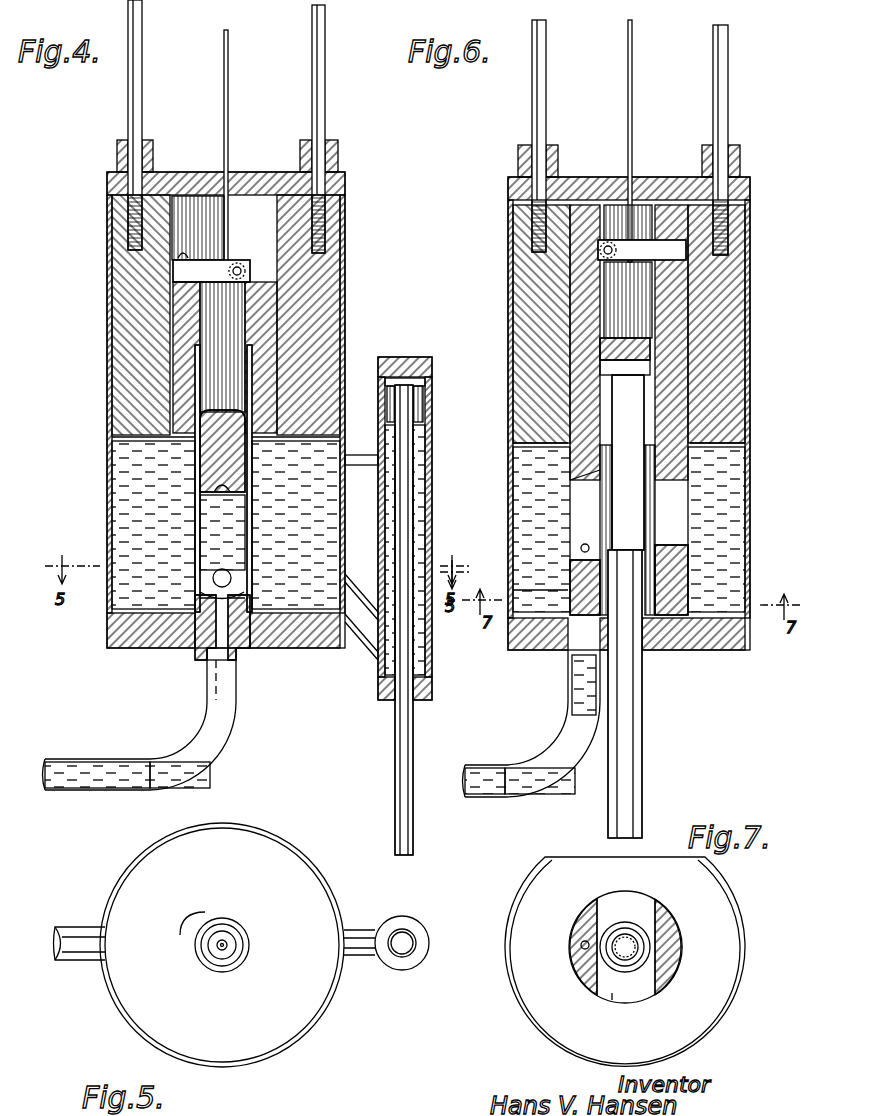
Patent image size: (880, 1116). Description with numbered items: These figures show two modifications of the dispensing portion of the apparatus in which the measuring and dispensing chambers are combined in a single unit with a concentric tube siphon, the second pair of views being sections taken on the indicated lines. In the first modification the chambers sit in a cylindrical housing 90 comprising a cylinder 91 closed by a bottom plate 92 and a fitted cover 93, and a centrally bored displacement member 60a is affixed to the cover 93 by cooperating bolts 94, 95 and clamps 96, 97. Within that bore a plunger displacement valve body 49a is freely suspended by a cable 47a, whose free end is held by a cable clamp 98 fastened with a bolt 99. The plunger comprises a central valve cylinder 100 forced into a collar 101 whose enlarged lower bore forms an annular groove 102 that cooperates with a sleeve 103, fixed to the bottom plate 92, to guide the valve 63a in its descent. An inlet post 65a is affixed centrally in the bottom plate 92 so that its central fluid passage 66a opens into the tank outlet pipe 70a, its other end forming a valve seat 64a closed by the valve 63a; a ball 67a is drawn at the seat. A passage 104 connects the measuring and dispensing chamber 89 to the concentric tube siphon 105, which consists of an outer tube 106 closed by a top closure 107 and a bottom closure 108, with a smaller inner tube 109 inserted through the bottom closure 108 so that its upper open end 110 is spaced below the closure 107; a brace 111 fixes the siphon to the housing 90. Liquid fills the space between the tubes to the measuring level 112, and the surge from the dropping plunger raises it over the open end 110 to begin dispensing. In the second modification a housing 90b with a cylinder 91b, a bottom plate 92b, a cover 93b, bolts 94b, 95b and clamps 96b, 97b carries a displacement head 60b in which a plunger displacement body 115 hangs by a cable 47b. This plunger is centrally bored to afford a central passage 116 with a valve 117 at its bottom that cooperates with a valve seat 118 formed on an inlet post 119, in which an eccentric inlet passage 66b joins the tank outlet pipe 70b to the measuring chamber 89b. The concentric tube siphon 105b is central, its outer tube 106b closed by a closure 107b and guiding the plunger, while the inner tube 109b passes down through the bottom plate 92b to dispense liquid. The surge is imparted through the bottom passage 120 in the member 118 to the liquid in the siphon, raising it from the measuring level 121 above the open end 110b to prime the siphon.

In FIG. 4, the cable 47a is at (228, 86).
In FIG. 6, the cable 47b is at (632, 95).
In FIG. 4, the plunger displacement valve body 49a is at (248, 270).
In FIG. 4, the displacement member 60a is at (330, 296).
In FIG. 6, the displacement head 60b is at (735, 283).
In FIG. 4, the valve 63a is at (214, 490).
In FIG. 4, the valve seat 64a is at (212, 595).
In FIG. 4, the inlet post 65a is at (212, 655).
In FIG. 5, the inlet post 65a is at (215, 952).
In FIG. 4, the central fluid passage 66a is at (238, 652).
In FIG. 5, the central fluid passage 66a is at (230, 935).
In FIG. 6, the inlet passage 66b is at (580, 548).
In FIG. 7, the inlet passage 66b is at (580, 945).
In FIG. 4, the ball valve 67a is at (205, 587).
In FIG. 5, the ball valve 67a is at (195, 946).
In FIG. 4, the tank outlet pipe 70a is at (236, 745).
In FIG. 5, the tank outlet pipe 70a is at (86, 960).
In FIG. 6, the tank outlet pipe 70b is at (560, 715).
In FIG. 4, the measuring and dispensing chamber 89 is at (120, 440).
In FIG. 6, the measuring chamber 89b is at (525, 595).
In FIG. 4, the cylindrical housing 90 is at (345, 232).
In FIG. 6, the housing 90b is at (758, 218).
In FIG. 5, the cylinder 91 is at (120, 872).
In FIG. 7, the cylinder 91b is at (745, 918).
In FIG. 4, the bottom plate 92 is at (148, 648).
In FIG. 6, the bottom plate 92b is at (720, 650).
In FIG. 4, the fitted cover 93 is at (258, 172).
In FIG. 6, the cover 93b is at (662, 177).
In FIG. 4, the bolt 94 is at (325, 58).
In FIG. 6, the bolt 94b is at (728, 86).
In FIG. 4, the bolt 95 is at (128, 100).
In FIG. 6, the bolt 95b is at (546, 58).
In FIG. 4, the clamp 96 is at (117, 152).
In FIG. 6, the clamp 96b is at (518, 160).
In FIG. 4, the clamp 97 is at (338, 152).
In FIG. 6, the clamp 97b is at (740, 152).
In FIG. 4, the cable clamp 98 is at (240, 262).
In FIG. 4, the bolt 99 is at (186, 250).
In FIG. 4, the central valve cylinder 100 is at (248, 336).
In FIG. 4, the collar 101 is at (262, 318).
In FIG. 4, the annular groove 102 is at (195, 366).
In FIG. 4, the sleeve 103 is at (200, 478).
In FIG. 5, the sleeve 103 is at (232, 958).
In FIG. 4, the passage 104 is at (355, 650).
In FIG. 5, the passage 104 is at (360, 930).
In FIG. 4, the concentric tube siphon 105 is at (432, 368).
In FIG. 6, the concentric tube siphon 105b is at (590, 494).
In FIG. 4, the outer tube 106 is at (425, 488).
In FIG. 5, the outer tube 106 is at (400, 970).
In FIG. 6, the outer tube 106b is at (655, 500).
In FIG. 7, the outer tube 106b is at (640, 925).
In FIG. 4, the top closure 107 is at (410, 357).
In FIG. 6, the closure 107b is at (615, 335).
In FIG. 4, the bottom closure 108 is at (385, 702).
In FIG. 4, the inner tube 109 is at (395, 768).
In FIG. 5, the inner tube 109 is at (395, 960).
In FIG. 6, the inner tube 109b is at (642, 720).
In FIG. 7, the inner tube 109b is at (615, 935).
In FIG. 4, the upper open end 110 is at (425, 382).
In FIG. 6, the open end 110b is at (640, 365).
In FIG. 4, the brace 111 is at (363, 455).
In FIG. 4, the measuring level 112 is at (422, 420).
In FIG. 6, the plunger displacement body 115 is at (690, 303).
In FIG. 6, the central passage 116 is at (655, 322).
In FIG. 6, the valve 117 is at (690, 475).
In FIG. 6, the valve seat 118 is at (690, 560).
In FIG. 6, the inlet post 119 is at (745, 638).
In FIG. 7, the inlet post 119 is at (672, 965).
In FIG. 6, the bottom passage 120 is at (648, 648).
In FIG. 7, the bottom passage 120 is at (612, 993).
In FIG. 6, the measuring level 121 is at (648, 418).